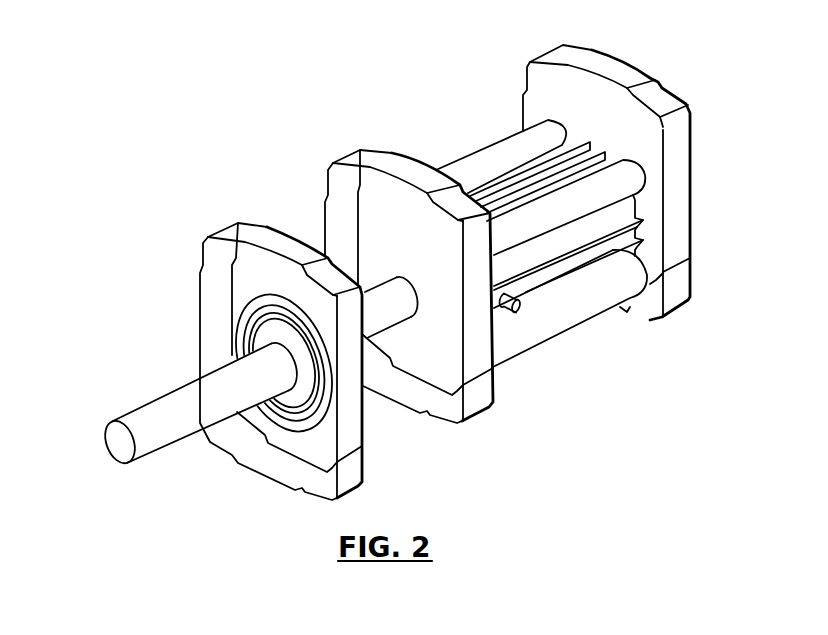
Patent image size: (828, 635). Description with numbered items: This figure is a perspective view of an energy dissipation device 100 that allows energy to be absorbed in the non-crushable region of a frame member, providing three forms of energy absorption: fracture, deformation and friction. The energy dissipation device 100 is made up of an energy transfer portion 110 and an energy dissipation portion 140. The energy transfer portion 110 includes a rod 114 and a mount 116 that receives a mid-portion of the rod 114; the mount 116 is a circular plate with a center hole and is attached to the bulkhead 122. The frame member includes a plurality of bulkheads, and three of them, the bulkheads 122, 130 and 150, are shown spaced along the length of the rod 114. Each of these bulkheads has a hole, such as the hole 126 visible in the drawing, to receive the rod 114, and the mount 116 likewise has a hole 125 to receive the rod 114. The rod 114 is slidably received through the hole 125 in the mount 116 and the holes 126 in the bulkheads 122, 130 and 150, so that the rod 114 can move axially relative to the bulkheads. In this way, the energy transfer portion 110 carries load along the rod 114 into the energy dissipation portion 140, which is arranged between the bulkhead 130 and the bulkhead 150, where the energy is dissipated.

The energy dissipation device 100 is at (153, 111).
The energy transfer portion 110 is at (135, 368).
The rod 114 is at (143, 422).
The mount 116 is at (236, 306).
The bulkhead 122 is at (208, 236).
The hole 125 is at (289, 299).
The hole 126 is at (407, 274).
The bulkhead 130 is at (356, 151).
The energy dissipation portion 140 is at (464, 108).
The bulkhead 150 is at (538, 62).